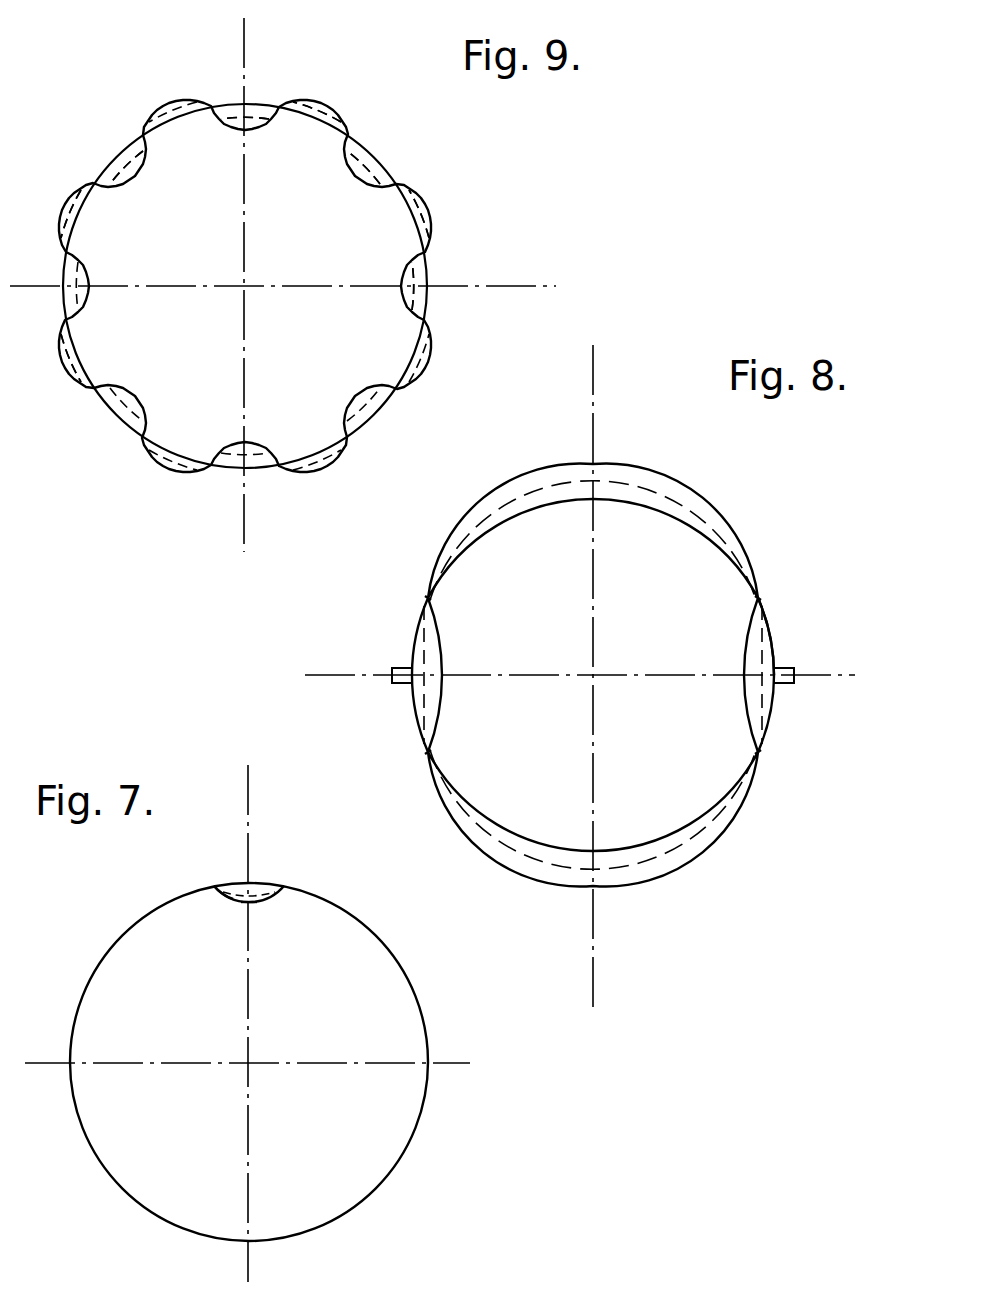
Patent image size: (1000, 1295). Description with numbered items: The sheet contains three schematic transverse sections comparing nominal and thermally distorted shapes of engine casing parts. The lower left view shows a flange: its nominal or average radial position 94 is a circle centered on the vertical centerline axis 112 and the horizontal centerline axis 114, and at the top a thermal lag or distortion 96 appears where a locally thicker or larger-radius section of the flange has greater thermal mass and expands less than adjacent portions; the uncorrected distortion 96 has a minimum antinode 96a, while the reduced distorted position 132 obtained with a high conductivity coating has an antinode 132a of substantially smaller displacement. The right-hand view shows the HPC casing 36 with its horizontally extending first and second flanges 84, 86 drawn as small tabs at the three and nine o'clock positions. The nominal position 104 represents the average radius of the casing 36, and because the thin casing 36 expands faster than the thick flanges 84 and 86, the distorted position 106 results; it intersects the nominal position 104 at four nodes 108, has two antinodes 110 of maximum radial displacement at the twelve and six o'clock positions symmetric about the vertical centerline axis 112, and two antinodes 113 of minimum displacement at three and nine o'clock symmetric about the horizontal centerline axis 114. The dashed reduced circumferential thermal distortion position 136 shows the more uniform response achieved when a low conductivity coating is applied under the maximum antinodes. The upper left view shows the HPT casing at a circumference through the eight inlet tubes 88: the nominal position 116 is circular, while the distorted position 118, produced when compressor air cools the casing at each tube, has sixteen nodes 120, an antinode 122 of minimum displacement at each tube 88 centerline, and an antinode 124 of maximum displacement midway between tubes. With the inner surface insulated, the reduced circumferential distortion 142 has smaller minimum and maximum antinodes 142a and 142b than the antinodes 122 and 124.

In FIG. 8, the HPC casing 36 is at (775, 650).
In FIG. 8, the first flange 84 is at (394, 668).
In FIG. 8, the second flange 86 is at (790, 690).
In FIG. 9, the inlet tubes 88 is at (243, 102).
In FIG. 7, the nominal position 94 is at (428, 1110).
In FIG. 7, the distortion 96 is at (236, 906).
In FIG. 7, the minimum antinode 96a is at (246, 905).
In FIG. 8, the nominal position 104 is at (409, 705).
In FIG. 8, the distorted position 106 is at (444, 636).
In FIG. 8, the nodes 108 is at (430, 599).
In FIG. 8, the antinodes 110 is at (652, 468).
In FIG. 9, the vertical centerline axis 112 is at (244, 517).
In FIG. 8, the vertical centerline axis 112 is at (591, 372).
In FIG. 7, the vertical centerline axis 112 is at (250, 812).
In FIG. 8, the antinodes 113 is at (441, 690).
In FIG. 9, the horizontal centerline axis 114 is at (473, 288).
In FIG. 8, the horizontal centerline axis 114 is at (316, 672).
In FIG. 7, the horizontal centerline axis 114 is at (455, 1063).
In FIG. 9, the nominal position 116 is at (426, 264).
In FIG. 9, the distorted position 118 is at (335, 104).
In FIG. 9, the nodes 120 is at (96, 378).
In FIG. 9, the antinode 122 is at (250, 128).
In FIG. 9, the antinode 124 is at (434, 209).
In FIG. 7, the reduced distorted position 132 is at (262, 902).
In FIG. 7, the antinode 132a is at (222, 896).
In FIG. 8, the reduced circumferential thermal distortion position 136 is at (658, 492).
In FIG. 9, the reduced circumferential distortion 142 is at (362, 150).
In FIG. 9, the minimum antinode 142a is at (135, 160).
In FIG. 9, the maximum antinode 142b is at (76, 215).